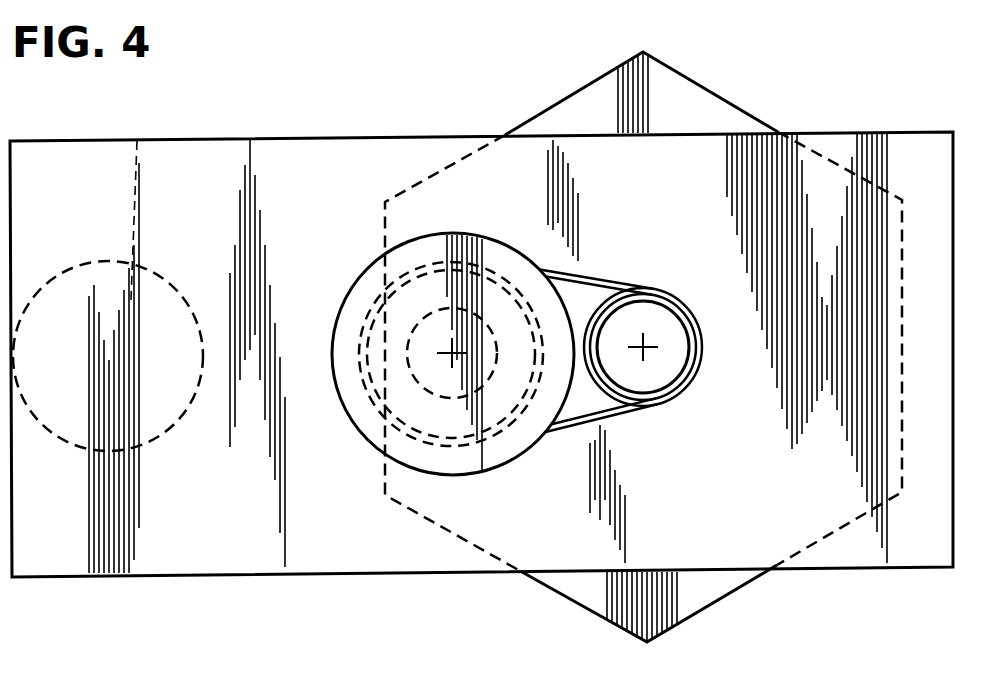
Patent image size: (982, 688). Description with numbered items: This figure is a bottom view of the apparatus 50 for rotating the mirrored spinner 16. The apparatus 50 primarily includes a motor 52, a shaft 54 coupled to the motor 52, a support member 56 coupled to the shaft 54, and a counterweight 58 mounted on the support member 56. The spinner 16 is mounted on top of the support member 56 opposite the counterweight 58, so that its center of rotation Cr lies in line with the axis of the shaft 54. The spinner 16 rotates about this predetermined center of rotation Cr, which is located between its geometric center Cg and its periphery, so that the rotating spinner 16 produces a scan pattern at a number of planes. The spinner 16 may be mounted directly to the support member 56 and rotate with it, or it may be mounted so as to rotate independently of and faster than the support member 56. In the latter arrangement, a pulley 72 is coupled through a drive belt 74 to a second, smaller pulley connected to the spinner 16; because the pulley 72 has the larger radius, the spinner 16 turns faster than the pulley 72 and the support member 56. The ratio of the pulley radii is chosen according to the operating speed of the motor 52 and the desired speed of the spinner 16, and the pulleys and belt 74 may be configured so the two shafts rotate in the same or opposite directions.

The apparatus 50 is at (337, 50).
The mirrored spinner 16 is at (712, 92).
The support member 56 is at (358, 577).
The counterweight 58 is at (164, 440).
The motor 52 is at (376, 446).
The pulley 72 is at (352, 292).
The shaft 54 is at (398, 357).
The center of rotation Cr is at (450, 356).
The drive belt 74 is at (622, 282).
The geometric center Cg is at (648, 350).